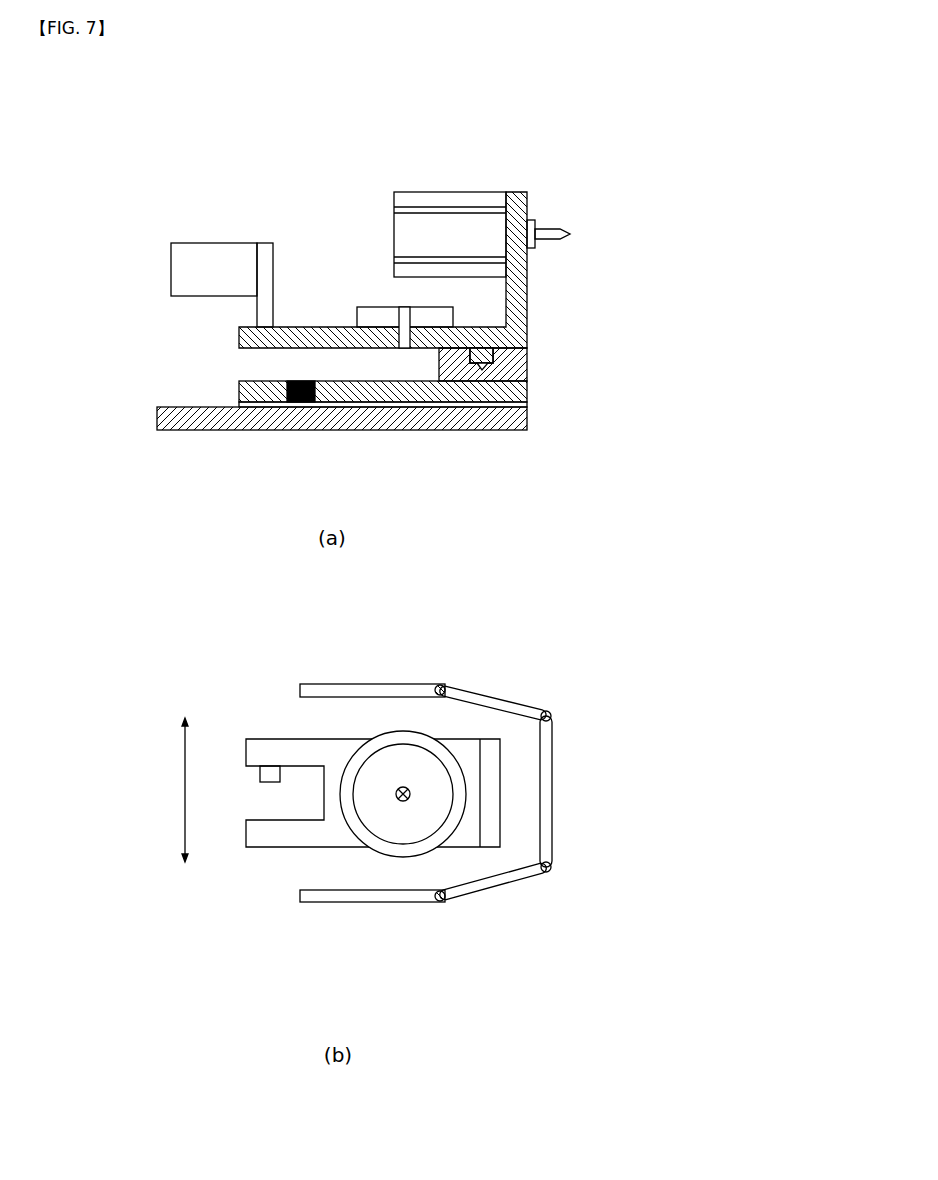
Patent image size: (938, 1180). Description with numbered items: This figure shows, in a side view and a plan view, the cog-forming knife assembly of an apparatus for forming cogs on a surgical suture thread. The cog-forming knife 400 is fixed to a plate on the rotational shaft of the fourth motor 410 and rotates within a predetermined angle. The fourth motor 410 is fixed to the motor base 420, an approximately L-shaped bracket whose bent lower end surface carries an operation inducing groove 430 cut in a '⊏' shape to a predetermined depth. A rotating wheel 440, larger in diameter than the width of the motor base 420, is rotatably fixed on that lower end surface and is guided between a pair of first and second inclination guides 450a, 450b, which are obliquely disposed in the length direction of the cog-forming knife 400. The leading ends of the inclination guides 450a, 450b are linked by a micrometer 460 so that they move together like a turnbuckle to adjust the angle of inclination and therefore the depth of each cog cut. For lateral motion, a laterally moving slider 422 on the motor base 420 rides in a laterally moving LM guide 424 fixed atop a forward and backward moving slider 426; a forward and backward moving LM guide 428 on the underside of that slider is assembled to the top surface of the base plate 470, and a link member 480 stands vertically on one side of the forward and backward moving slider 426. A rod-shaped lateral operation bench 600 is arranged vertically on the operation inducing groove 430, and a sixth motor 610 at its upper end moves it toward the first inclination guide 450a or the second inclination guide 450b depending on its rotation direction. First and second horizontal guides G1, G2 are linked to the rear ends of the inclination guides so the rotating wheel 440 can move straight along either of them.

The cog-forming knife 400 is at (555, 236).
The fourth motor 410 is at (448, 192).
The motor base 420 is at (528, 292).
The laterally moving slider 422 is at (486, 398).
The laterally moving LM guide 424 is at (528, 360).
The forward and backward moving slider 426 is at (455, 402).
The forward and backward moving LM guide 428 is at (412, 407).
The operation inducing groove 430 is at (302, 793).
The rotating wheel 440 is at (443, 318).
The first inclination guide 450a is at (494, 697).
The second inclination guide 450b is at (490, 897).
The micrometer 460 is at (552, 790).
The base plate 470 is at (157, 420).
The link member 480 is at (300, 381).
The lateral operation bench 600 is at (268, 272).
The sixth motor 610 is at (205, 262).
The first horizontal guide G1 is at (307, 684).
The second horizontal guide G2 is at (306, 902).